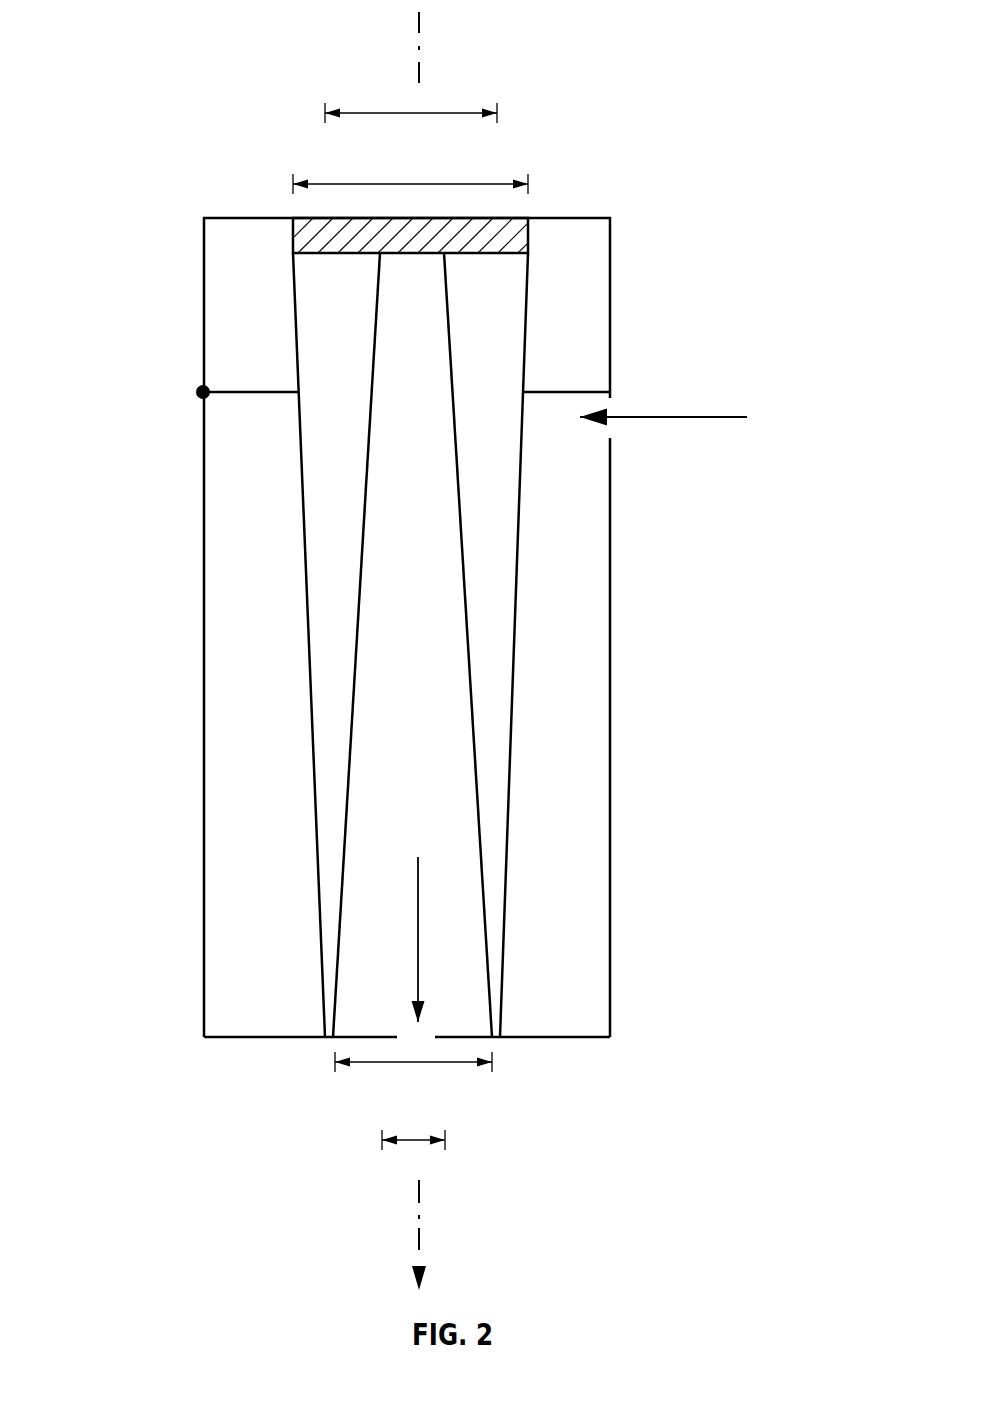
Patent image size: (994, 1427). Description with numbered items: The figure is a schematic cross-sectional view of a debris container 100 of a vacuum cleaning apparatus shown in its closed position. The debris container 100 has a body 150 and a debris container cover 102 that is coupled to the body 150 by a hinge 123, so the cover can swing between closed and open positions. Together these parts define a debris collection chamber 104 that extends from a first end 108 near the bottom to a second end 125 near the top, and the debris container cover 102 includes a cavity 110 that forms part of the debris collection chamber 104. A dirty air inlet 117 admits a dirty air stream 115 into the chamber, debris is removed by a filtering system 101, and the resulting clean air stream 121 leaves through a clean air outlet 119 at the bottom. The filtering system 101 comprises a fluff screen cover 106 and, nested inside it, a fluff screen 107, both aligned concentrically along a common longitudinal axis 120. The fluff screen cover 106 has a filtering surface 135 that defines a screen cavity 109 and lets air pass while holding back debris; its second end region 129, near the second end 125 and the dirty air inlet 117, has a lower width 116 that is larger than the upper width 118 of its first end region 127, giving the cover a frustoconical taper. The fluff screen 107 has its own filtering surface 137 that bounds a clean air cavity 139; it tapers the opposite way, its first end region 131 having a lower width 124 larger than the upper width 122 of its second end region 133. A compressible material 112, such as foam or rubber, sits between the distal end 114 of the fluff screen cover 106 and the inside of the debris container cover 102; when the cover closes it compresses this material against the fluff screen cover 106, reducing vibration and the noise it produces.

The debris container 100 is at (633, 100).
The filtering system 101 is at (257, 303).
The debris container cover 102 is at (204, 305).
The debris collection chamber 104 is at (560, 675).
The fluff screen cover 106 is at (527, 313).
The fluff screen 107 is at (358, 587).
The first end 108 is at (580, 1065).
The screen cavity 109 is at (340, 633).
The cavity 110 is at (245, 332).
The compressible material 112 is at (287, 265).
The distal end 114 is at (548, 263).
The dirty air stream 115 is at (685, 418).
The second cross-sectional size 116 is at (417, 183).
The dirty air inlet 117 is at (610, 410).
The first cross-sectional size 118 is at (415, 112).
The clean air outlet 119 is at (403, 1030).
The longitudinal axis 120 is at (420, 25).
The clean air stream 121 is at (418, 943).
The second cross-sectional size 122 is at (415, 1142).
The hinge 123 is at (203, 392).
The first cross-sectional size 124 is at (415, 1063).
The second end 125 is at (632, 205).
The first end region 127 is at (505, 1025).
The second end region 129 is at (283, 265).
The first end region 131 is at (343, 1023).
The second end region 133 is at (373, 268).
The filtering surface 135 is at (520, 575).
The filtering surface 137 is at (468, 635).
The clean air cavity 139 is at (392, 727).
The body 150 is at (612, 802).